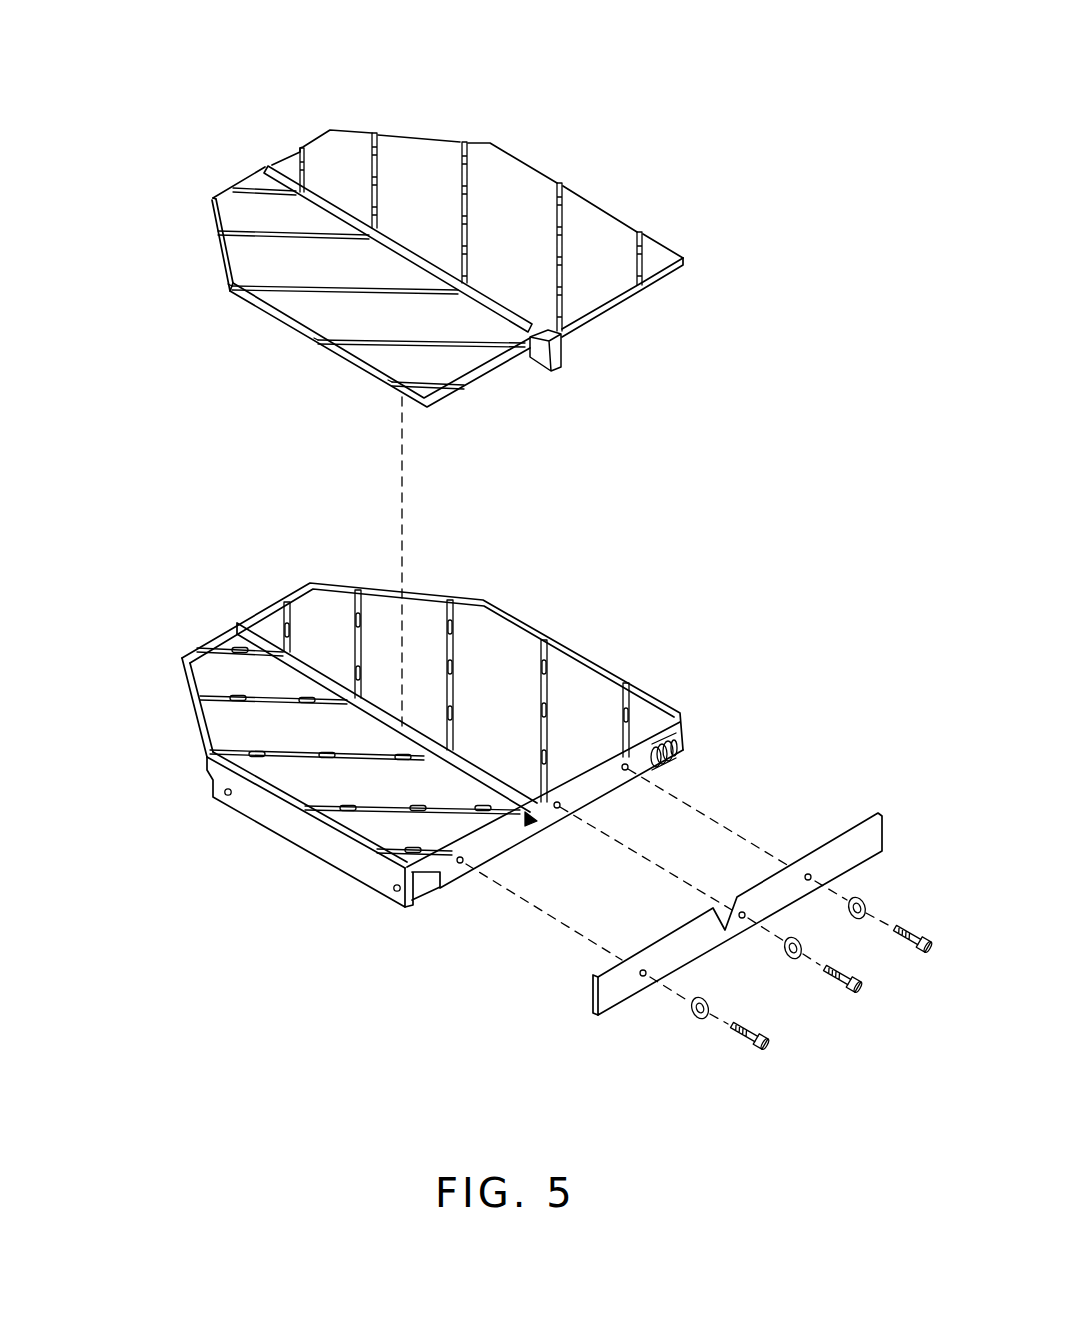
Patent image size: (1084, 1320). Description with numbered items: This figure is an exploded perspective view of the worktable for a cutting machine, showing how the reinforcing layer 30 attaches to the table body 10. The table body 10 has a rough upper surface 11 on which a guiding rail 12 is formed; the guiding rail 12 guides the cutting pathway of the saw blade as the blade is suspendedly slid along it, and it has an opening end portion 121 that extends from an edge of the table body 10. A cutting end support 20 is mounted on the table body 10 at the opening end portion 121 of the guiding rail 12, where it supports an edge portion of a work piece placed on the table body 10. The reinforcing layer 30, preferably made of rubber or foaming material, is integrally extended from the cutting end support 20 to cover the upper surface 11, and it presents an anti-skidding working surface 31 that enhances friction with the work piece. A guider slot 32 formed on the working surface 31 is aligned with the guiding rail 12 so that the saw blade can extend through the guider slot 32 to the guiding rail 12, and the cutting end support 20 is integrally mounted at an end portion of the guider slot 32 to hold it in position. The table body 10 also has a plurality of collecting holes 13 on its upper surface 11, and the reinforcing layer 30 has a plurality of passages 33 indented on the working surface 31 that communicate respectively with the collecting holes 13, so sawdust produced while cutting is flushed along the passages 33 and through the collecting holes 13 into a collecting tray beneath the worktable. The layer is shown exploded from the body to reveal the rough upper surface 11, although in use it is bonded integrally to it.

The table body 10 is at (760, 662).
The upper surface 11 is at (577, 697).
The guiding rail 12 is at (280, 657).
The collecting holes 13 is at (359, 612).
The opening end portion 121 is at (535, 824).
The cutting end support 20 is at (567, 355).
The reinforcing layer 30 is at (518, 238).
The anti-skidding working surface 31 is at (595, 247).
The guider slot 32 is at (422, 257).
The passages 33 is at (467, 155).